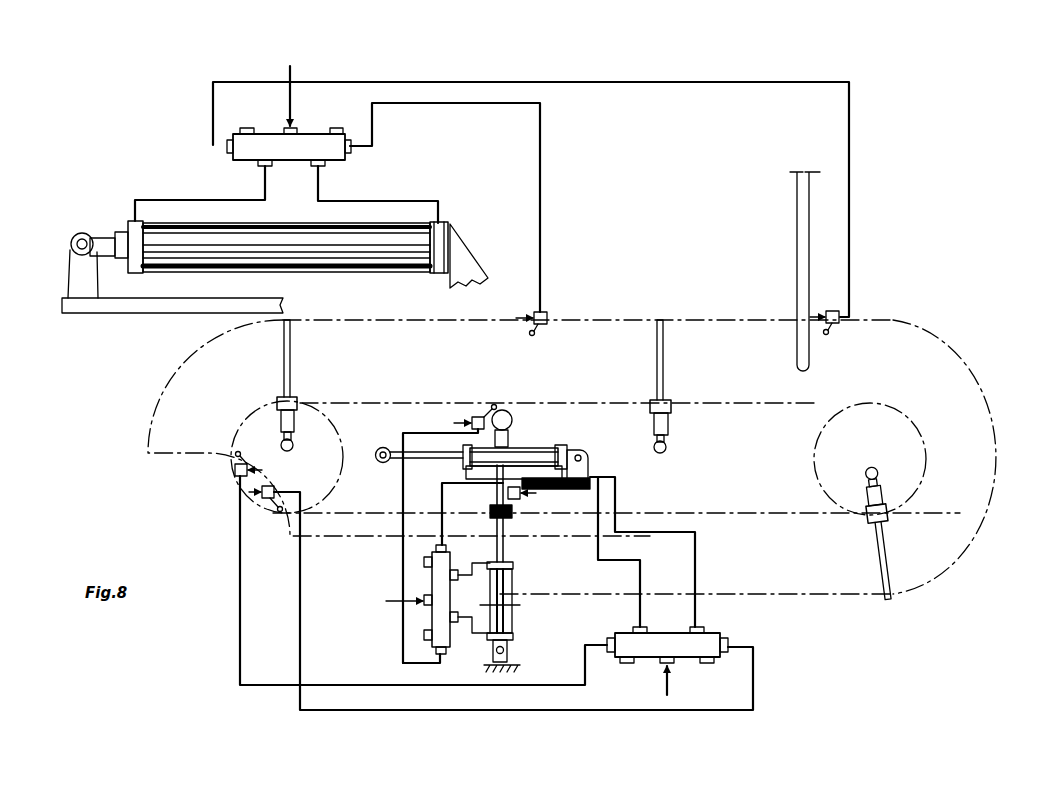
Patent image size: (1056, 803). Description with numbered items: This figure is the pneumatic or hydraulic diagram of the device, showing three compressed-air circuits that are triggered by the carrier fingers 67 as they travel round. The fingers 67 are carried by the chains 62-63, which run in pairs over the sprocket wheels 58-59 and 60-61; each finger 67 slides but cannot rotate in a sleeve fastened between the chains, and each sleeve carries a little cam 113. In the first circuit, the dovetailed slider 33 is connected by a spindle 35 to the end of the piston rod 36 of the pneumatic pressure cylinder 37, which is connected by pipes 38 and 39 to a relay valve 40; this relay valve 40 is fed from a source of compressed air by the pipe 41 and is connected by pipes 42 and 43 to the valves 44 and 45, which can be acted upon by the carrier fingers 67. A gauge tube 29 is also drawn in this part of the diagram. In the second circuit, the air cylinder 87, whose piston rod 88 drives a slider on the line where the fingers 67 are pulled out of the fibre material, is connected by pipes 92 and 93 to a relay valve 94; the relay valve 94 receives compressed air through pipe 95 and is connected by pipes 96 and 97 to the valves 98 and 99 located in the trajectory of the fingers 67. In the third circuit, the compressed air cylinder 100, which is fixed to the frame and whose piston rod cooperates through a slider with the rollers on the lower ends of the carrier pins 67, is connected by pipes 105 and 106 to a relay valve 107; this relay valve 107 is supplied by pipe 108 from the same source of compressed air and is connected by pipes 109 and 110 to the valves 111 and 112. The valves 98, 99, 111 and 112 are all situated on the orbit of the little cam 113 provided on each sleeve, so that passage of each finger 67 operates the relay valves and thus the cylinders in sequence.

The pressure gauge tube 29 is at (810, 223).
The dovetailed slider 33 is at (135, 307).
The spindle 35 is at (70, 244).
The piston rod 36 is at (105, 236).
The pneumatic pressure cylinder 37 is at (326, 253).
The pipe 38 is at (192, 200).
The pipe 39 is at (392, 201).
The relay valve 40 is at (310, 136).
The pipe 41 is at (286, 102).
The pipe 42 is at (603, 92).
The pipe 43 is at (544, 165).
The valve 44 is at (832, 311).
The valve 45 is at (548, 315).
The sprocket wheels 58-59 is at (342, 420).
The sprocket wheels 60-61 is at (916, 420).
The chains 62-63 is at (566, 403).
The carrier finger 67 is at (290, 346).
The air cylinder 87 is at (553, 448).
The piston rod 88 is at (391, 462).
The pipe 92 is at (617, 497).
The pipe 93 is at (596, 500).
The relay valve 94 is at (710, 636).
The pipe 95 is at (670, 685).
The pipe 96 is at (335, 684).
The pipe 97 is at (302, 646).
The valve 98 is at (256, 462).
The valve 99 is at (274, 486).
The compressed air cylinder 100 is at (514, 628).
The pipe 105 is at (482, 550).
The pipe 106 is at (486, 636).
The relay valve 107 is at (430, 620).
The pipe 108 is at (388, 600).
The pipe 109 is at (444, 525).
The pipe 110 is at (400, 522).
The valve 111 is at (522, 499).
The valve 112 is at (468, 415).
The little cam 113 is at (308, 404).